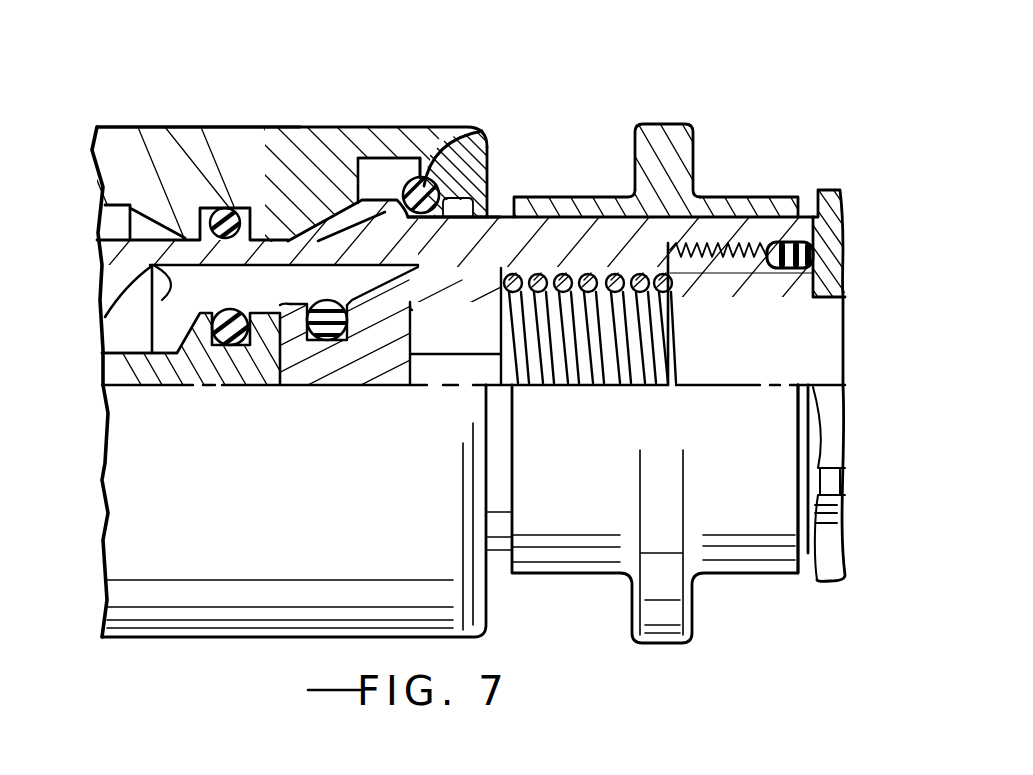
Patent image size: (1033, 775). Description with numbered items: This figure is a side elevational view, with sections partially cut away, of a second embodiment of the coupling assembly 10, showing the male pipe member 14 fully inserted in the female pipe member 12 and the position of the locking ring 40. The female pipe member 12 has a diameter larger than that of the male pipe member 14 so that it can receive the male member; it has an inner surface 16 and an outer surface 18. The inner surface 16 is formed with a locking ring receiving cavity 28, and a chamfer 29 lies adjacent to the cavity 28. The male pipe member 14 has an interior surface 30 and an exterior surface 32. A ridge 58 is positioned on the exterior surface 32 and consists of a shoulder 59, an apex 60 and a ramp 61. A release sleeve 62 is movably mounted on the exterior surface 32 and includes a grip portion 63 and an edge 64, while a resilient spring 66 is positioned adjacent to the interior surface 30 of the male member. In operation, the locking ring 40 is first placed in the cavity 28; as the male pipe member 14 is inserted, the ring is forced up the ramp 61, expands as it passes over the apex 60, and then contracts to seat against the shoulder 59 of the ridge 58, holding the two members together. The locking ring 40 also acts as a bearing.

The coupling assembly 10 is at (541, 99).
The female pipe member 12 is at (238, 90).
The male pipe member 14 is at (720, 160).
The inner surface 16 is at (264, 243).
The outer surface 18 is at (172, 125).
The locking ring receiving cavity 28 is at (372, 175).
The chamfer 29 is at (480, 133).
The interior surface 30 is at (153, 305).
The exterior surface 32 is at (808, 207).
The locking ring 40 is at (415, 220).
The ridge 58 is at (415, 178).
The shoulder 59 is at (447, 138).
The apex 60 is at (403, 178).
The ramp 61 is at (373, 175).
The release sleeve 62 is at (748, 197).
The grip portion 63 is at (658, 124).
The edge 64 is at (520, 197).
The resilient spring 66 is at (557, 387).